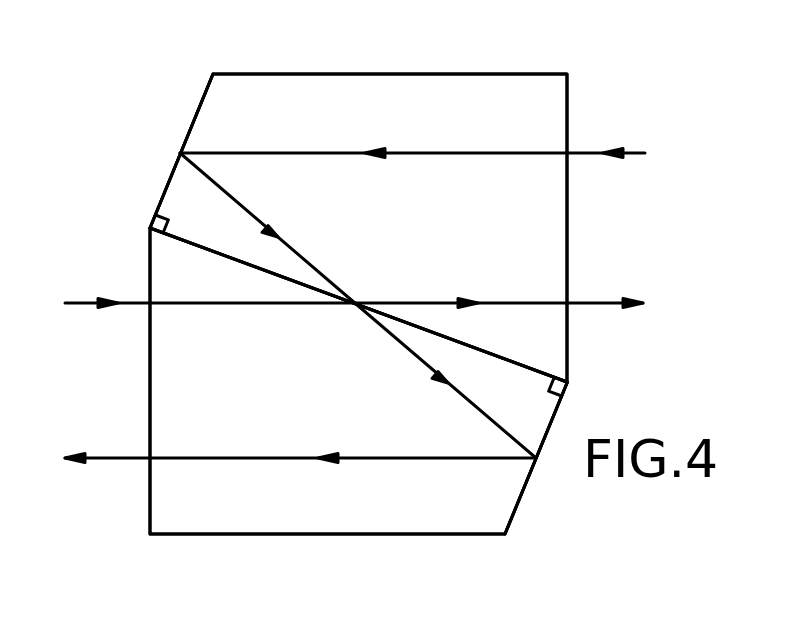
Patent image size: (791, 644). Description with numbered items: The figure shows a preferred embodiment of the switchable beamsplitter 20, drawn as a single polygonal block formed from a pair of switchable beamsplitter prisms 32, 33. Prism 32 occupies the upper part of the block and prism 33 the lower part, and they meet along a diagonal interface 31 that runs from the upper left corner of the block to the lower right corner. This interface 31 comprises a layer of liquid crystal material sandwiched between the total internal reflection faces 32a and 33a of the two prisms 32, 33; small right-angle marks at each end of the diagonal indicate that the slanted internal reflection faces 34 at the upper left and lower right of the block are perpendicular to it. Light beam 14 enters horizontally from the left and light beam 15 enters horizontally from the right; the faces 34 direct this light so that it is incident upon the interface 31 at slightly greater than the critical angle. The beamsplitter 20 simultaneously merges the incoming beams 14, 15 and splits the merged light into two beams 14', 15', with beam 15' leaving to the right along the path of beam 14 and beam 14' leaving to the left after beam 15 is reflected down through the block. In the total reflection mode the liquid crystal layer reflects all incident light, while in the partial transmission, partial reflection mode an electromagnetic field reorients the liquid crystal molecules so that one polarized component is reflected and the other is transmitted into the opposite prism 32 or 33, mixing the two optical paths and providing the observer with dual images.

The switchable beamsplitter 20 is at (136, 211).
The internal reflection faces 34 is at (198, 100).
The interface 31 is at (227, 257).
The switchable beamsplitter prism 32 is at (507, 231).
The switchable beamsplitter prism 33 is at (274, 397).
The total internal reflection face 32a is at (303, 283).
The total internal reflection face 33a is at (282, 280).
The light beam 14 is at (210, 333).
The split light beam 14' is at (300, 416).
The light beam 15 is at (412, 192).
The split light beam 15' is at (503, 263).